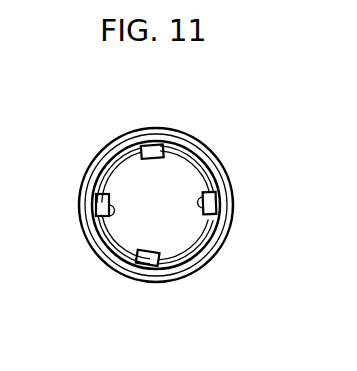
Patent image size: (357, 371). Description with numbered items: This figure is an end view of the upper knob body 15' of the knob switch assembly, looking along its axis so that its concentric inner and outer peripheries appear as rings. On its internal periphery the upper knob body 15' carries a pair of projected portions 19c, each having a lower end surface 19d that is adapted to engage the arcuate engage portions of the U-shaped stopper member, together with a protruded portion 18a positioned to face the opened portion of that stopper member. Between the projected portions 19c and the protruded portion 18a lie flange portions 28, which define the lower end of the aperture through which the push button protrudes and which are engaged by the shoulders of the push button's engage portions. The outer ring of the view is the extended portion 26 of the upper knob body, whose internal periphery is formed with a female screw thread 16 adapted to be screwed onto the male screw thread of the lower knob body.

The extended portion 26 is at (197, 272).
The upper knob body 15' is at (161, 183).
The female screw thread 16 is at (119, 258).
The flange portions 28 is at (125, 162).
The protruded portion 18a is at (153, 143).
The lower end surfaces 19d is at (216, 188).
The projected portions 19c is at (201, 208).